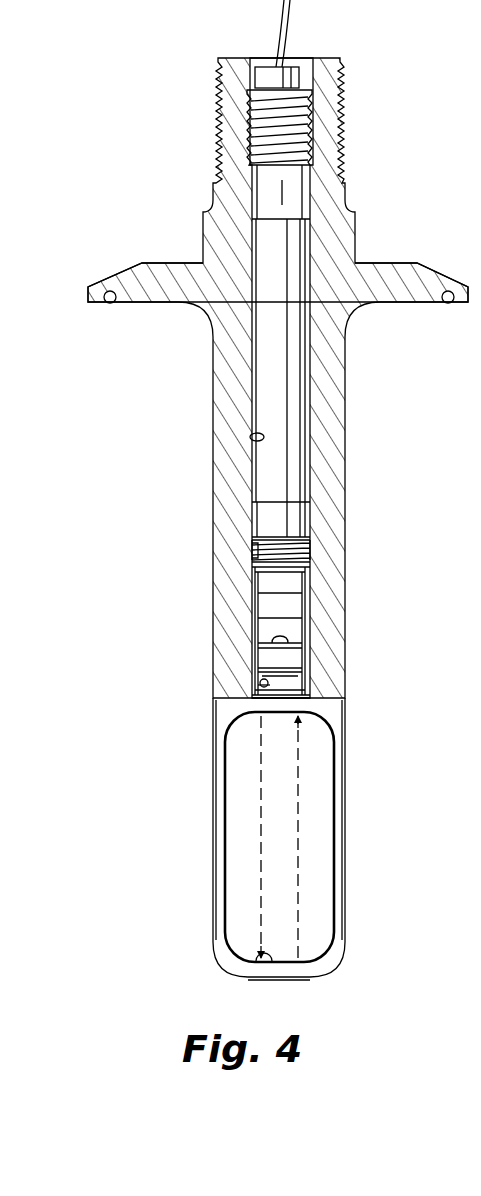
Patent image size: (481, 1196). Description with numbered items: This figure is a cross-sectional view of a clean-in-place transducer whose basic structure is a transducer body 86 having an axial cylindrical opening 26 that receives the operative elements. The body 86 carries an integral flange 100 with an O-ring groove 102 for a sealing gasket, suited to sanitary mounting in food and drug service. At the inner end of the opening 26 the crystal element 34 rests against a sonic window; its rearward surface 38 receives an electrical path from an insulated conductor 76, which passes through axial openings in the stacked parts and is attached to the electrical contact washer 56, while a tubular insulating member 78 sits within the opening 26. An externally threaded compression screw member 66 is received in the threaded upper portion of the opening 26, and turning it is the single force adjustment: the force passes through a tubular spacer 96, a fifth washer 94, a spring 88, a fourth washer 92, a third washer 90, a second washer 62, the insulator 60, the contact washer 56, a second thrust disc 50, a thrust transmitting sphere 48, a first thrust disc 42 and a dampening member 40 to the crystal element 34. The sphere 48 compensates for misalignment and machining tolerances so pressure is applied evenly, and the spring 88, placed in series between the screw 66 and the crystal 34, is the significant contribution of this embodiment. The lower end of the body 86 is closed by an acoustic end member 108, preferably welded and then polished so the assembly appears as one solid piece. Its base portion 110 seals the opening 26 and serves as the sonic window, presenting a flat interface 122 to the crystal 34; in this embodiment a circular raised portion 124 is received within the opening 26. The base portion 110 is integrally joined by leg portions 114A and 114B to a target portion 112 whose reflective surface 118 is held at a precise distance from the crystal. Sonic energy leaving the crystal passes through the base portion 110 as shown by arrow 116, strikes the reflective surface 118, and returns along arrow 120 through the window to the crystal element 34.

The cylindrical opening 26 is at (250, 437).
The crystal element 34 is at (306, 690).
The crystal rearward surface 38 is at (258, 676).
The dampening member 40 is at (303, 668).
The first thrust disc 42 is at (303, 652).
The thrust transmitting sphere 48 is at (272, 641).
The second thrust disc 50 is at (256, 620).
The electrical contact washer 56 is at (255, 600).
The insulator 60 is at (303, 592).
The second washer 62 is at (302, 578).
The compression screw member 66 is at (300, 132).
The insulated conductor 76 is at (281, 22).
The tubular insulating member 78 is at (256, 658).
The transducer body 86 is at (332, 422).
The spring 88 is at (305, 548).
The third washer 90 is at (250, 560).
The fourth washer 92 is at (252, 548).
The fifth washer 94 is at (298, 512).
The tubular spacer 96 is at (285, 382).
The integral flange 100 is at (162, 296).
The O-ring groove 102 is at (108, 303).
The acoustic end member 108 is at (373, 797).
The base portion 110 is at (300, 722).
The target portion 112 is at (298, 977).
The leg portion 114A is at (215, 853).
The leg portion 114B is at (345, 870).
The arrow 116 is at (260, 785).
The reflective surface 118 is at (258, 952).
The arrow 120 is at (300, 918).
The interface 122 is at (258, 686).
The raised portion 124 is at (280, 704).